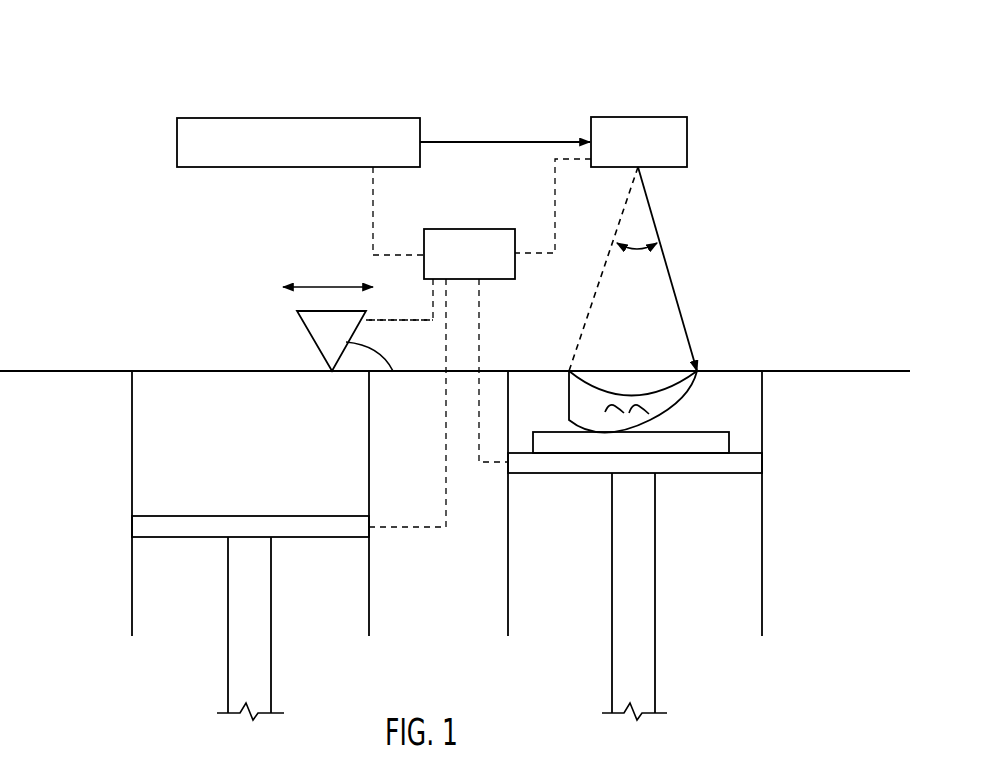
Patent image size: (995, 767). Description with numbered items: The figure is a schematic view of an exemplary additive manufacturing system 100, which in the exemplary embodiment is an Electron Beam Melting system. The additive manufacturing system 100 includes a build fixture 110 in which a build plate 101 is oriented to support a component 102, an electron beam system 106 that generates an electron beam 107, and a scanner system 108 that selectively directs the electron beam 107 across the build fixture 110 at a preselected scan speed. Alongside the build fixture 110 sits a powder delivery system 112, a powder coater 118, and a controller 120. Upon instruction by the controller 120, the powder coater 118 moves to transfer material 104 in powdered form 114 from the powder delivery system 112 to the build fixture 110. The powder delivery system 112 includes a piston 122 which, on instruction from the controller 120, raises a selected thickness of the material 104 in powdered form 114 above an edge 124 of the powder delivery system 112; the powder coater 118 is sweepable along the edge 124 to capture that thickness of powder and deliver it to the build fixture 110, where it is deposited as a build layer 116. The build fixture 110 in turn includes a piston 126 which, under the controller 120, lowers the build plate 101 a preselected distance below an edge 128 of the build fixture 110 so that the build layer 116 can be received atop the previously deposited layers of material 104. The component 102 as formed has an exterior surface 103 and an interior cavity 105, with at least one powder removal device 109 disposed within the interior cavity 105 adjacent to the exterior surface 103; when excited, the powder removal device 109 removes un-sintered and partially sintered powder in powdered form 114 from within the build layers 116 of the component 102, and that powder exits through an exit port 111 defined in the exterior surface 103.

The additive manufacturing system 100 is at (235, 62).
The build plate 101 is at (729, 443).
The component 102 is at (600, 398).
The exterior surface 103 is at (658, 378).
The material 104 is at (132, 400).
The interior cavity 105 is at (623, 405).
The electron beam system 106 is at (316, 156).
The electron beam 107 is at (505, 141).
The scanner system 108 is at (656, 156).
The powder removal device 109 is at (569, 400).
The build fixture 110 is at (770, 668).
The exit port 111 is at (569, 371).
The powder delivery system 112 is at (196, 670).
The powdered form 114 is at (762, 400).
The build layer 116 is at (712, 357).
The powder coater 118 is at (313, 340).
The controller 120 is at (487, 268).
The piston 122 is at (270, 637).
The edge 124 is at (130, 337).
The piston 126 is at (657, 637).
The edge 128 is at (780, 360).